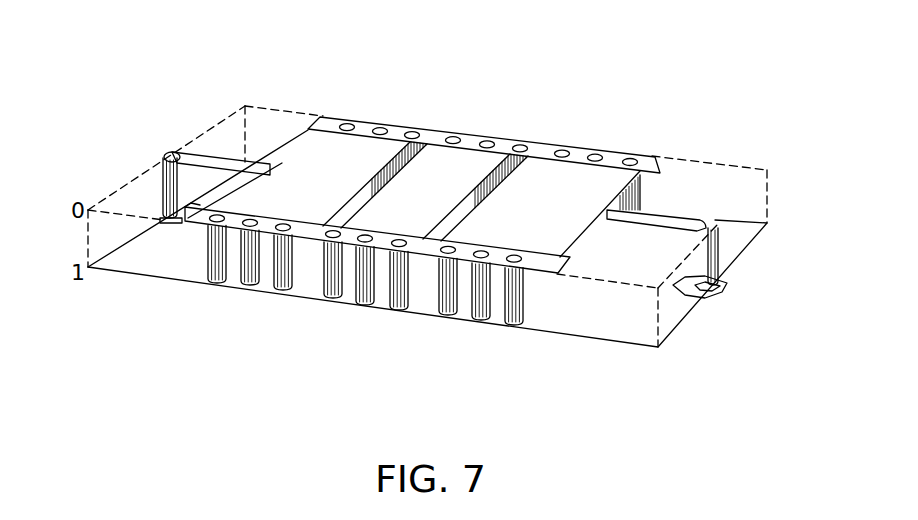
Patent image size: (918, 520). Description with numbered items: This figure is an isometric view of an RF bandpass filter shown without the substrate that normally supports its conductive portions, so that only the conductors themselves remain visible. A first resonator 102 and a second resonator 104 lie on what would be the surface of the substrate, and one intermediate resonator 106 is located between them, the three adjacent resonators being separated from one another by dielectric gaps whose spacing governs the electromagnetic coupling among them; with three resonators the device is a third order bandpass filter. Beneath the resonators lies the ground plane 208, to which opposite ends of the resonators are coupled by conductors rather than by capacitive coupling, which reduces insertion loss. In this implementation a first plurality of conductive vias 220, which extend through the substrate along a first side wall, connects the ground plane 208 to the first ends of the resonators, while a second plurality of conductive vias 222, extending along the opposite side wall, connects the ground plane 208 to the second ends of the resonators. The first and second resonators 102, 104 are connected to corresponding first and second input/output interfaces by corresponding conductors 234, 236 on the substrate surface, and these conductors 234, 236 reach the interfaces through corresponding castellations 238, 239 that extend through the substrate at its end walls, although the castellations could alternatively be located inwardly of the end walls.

The first resonator 102 is at (330, 158).
The second resonator 104 is at (562, 183).
The intermediate resonator 106 is at (447, 162).
The ground plane 208 is at (123, 272).
The first plurality of conductive vias 220 is at (210, 288).
The second plurality of conductive vias 222 is at (641, 180).
The conductor 234 is at (228, 152).
The conductor 236 is at (707, 217).
The castellation 238 is at (162, 208).
The castellation 239 is at (719, 252).